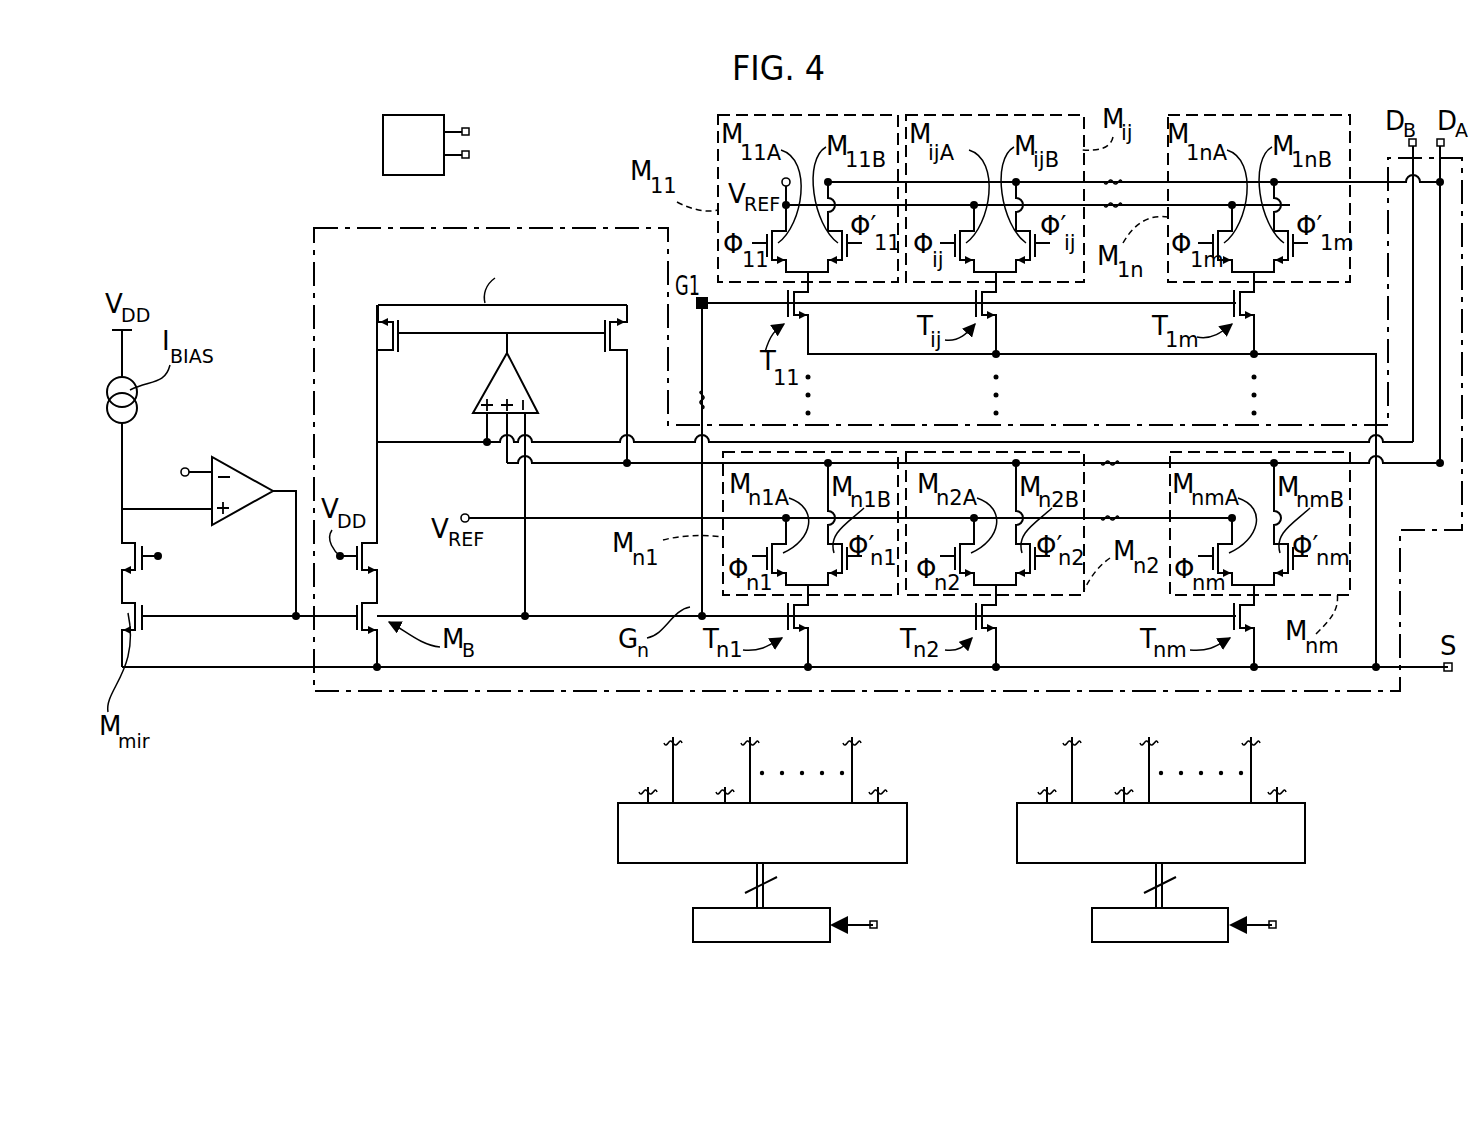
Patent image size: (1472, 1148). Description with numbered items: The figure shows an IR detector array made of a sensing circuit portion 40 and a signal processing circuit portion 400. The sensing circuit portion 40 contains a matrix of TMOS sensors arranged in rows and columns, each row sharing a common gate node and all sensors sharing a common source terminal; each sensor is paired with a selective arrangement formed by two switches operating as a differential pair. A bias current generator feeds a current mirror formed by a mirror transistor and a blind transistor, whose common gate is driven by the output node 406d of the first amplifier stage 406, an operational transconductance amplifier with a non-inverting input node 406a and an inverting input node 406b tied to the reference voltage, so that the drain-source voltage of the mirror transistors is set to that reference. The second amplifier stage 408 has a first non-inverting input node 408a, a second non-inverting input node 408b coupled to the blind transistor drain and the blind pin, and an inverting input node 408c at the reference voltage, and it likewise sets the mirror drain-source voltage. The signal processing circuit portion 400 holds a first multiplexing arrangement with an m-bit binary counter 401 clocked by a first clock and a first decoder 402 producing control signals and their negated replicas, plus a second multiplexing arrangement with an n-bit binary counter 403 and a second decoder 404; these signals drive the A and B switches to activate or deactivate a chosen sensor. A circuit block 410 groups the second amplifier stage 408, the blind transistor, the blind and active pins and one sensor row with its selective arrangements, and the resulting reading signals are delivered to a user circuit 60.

The user circuit 60 is at (430, 162).
The sensing circuit portion 40 is at (1132, 424).
The signal processing circuit portion 400 is at (466, 786).
The m-bit binary counter 401 is at (697, 932).
The first decoder 402 is at (645, 856).
The n-bit binary counter 403 is at (1096, 932).
The second decoder 404 is at (1043, 856).
The first amplifier stage 406 is at (243, 470).
The non-inverting input node 406a is at (204, 512).
The inverting input node 406b is at (206, 462).
The output node 406d is at (277, 490).
The second amplifier stage 408 is at (542, 365).
The first non-inverting input node 408a is at (507, 425).
The second non-inverting input node 408b is at (487, 418).
The inverting input node 408c is at (587, 412).
The circuit block 410 is at (298, 691).